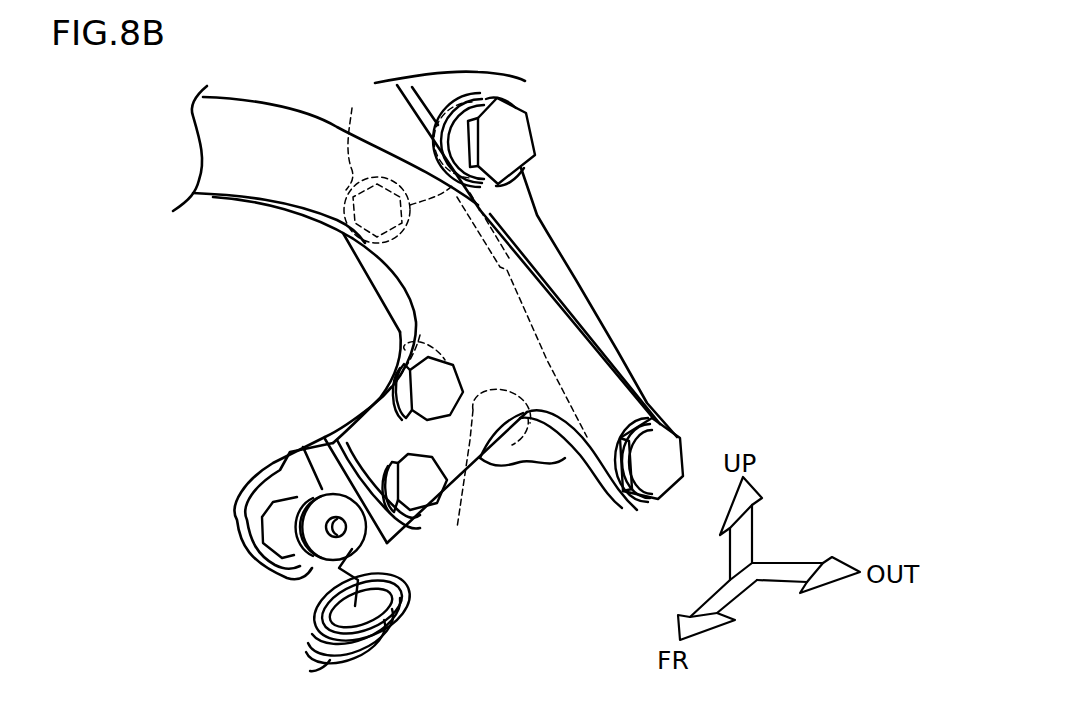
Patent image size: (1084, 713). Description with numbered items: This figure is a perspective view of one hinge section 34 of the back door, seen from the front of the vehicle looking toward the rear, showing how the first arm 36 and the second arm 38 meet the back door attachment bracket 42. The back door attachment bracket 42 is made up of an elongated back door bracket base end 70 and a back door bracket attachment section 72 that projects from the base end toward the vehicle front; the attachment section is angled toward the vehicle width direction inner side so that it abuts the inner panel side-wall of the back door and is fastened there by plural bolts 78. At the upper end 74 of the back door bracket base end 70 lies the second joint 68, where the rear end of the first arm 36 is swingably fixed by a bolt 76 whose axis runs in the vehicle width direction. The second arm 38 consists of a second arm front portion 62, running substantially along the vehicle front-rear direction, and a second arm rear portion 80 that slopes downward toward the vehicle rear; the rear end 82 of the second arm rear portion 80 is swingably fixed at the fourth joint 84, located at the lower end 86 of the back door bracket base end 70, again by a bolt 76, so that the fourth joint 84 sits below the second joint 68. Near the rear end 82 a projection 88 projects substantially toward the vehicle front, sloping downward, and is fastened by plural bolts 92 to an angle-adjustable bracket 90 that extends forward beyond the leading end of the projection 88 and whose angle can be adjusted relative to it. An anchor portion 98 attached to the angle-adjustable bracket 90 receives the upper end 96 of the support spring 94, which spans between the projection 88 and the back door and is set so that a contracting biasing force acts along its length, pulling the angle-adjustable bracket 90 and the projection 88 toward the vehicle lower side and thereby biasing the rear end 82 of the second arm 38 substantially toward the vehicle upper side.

The hinge section 34 is at (579, 285).
The first arm 36 is at (404, 102).
The second arm 38 is at (296, 103).
The back door attachment bracket 42 is at (572, 317).
The second arm front portion 62 is at (218, 210).
The second joint 68 is at (535, 130).
The back door bracket base end 70 is at (599, 293).
The back door bracket attachment section 72 is at (382, 286).
The upper end 74 is at (530, 173).
The bolt 76 is at (510, 134).
The bolts 78 is at (518, 490).
The second arm rear portion 80 is at (570, 331).
The rear end 82 is at (592, 466).
The fourth joint 84 is at (682, 500).
The lower end 86 is at (578, 468).
The projection 88 is at (388, 416).
The angle-adjustable bracket 90 is at (272, 472).
The bolts 92 is at (447, 376).
The support spring 94 is at (396, 606).
The upper end 96 is at (372, 560).
The anchor portion 98 is at (320, 568).